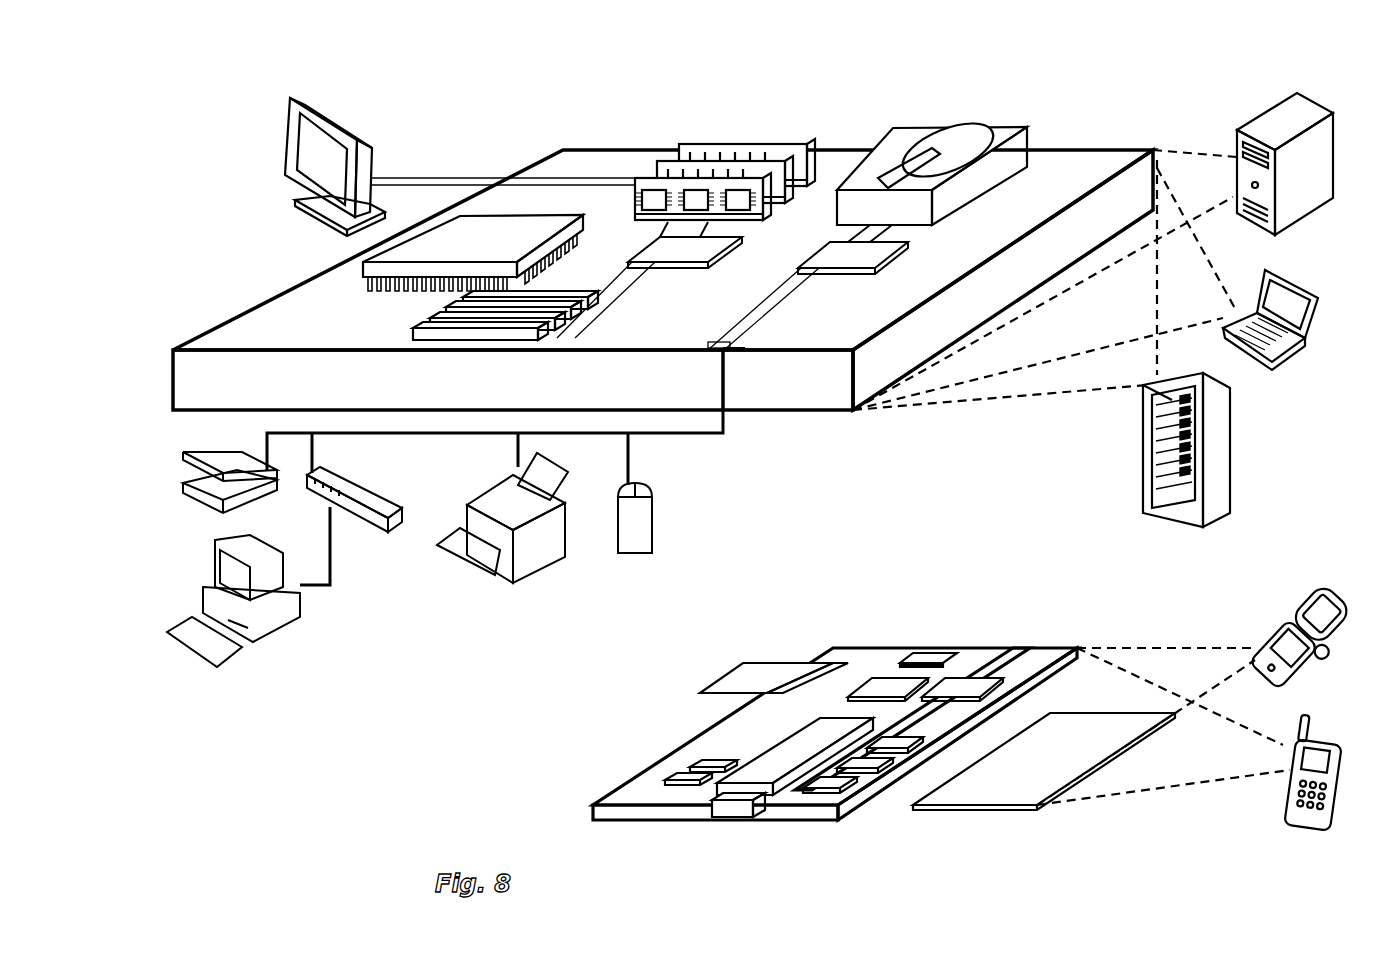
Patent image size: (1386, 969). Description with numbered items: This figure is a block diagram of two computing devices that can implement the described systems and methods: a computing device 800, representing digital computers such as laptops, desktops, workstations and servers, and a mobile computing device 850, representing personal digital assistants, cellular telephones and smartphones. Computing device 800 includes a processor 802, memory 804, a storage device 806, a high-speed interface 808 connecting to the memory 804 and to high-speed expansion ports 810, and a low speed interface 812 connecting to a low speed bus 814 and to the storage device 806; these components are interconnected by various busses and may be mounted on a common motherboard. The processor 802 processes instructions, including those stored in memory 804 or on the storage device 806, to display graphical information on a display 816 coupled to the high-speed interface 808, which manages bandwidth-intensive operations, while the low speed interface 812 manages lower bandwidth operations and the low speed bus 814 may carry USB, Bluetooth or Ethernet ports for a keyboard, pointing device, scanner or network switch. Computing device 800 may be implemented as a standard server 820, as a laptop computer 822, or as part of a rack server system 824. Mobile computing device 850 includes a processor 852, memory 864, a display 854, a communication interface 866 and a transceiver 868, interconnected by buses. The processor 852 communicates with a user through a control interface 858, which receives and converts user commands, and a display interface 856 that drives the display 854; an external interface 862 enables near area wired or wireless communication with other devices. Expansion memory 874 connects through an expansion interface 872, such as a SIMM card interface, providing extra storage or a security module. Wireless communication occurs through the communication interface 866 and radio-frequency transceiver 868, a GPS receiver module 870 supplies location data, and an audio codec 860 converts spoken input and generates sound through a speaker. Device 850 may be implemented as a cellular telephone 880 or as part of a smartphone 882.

The computing device 800 is at (489, 118).
The processor 802 is at (365, 272).
The memory 804 is at (695, 144).
The storage device 806 is at (935, 132).
The high-speed interface 808 is at (646, 262).
The high-speed expansion ports 810 is at (437, 318).
The low speed interface 812 is at (849, 255).
The low speed bus 814 is at (740, 350).
The display 816 is at (280, 101).
The standard server 820 is at (1237, 138).
The laptop computer 822 is at (1262, 272).
The rack server system 824 is at (1143, 474).
The computing device 850 is at (815, 622).
The processor 852 is at (776, 795).
The display 854 is at (1042, 808).
The display interface 856 is at (828, 795).
The control interface 858 is at (868, 772).
The audio codec 860 is at (893, 748).
The external interface 862 is at (733, 817).
The memory 864 is at (690, 773).
The communication interface 866 is at (885, 688).
The transceiver 868 is at (968, 689).
The GPS receiver module 870 is at (934, 648).
The expansion interface 872 is at (812, 666).
The expansion memory 874 is at (740, 668).
The cellular telephone 880 is at (1318, 598).
The smartphone 882 is at (1295, 740).